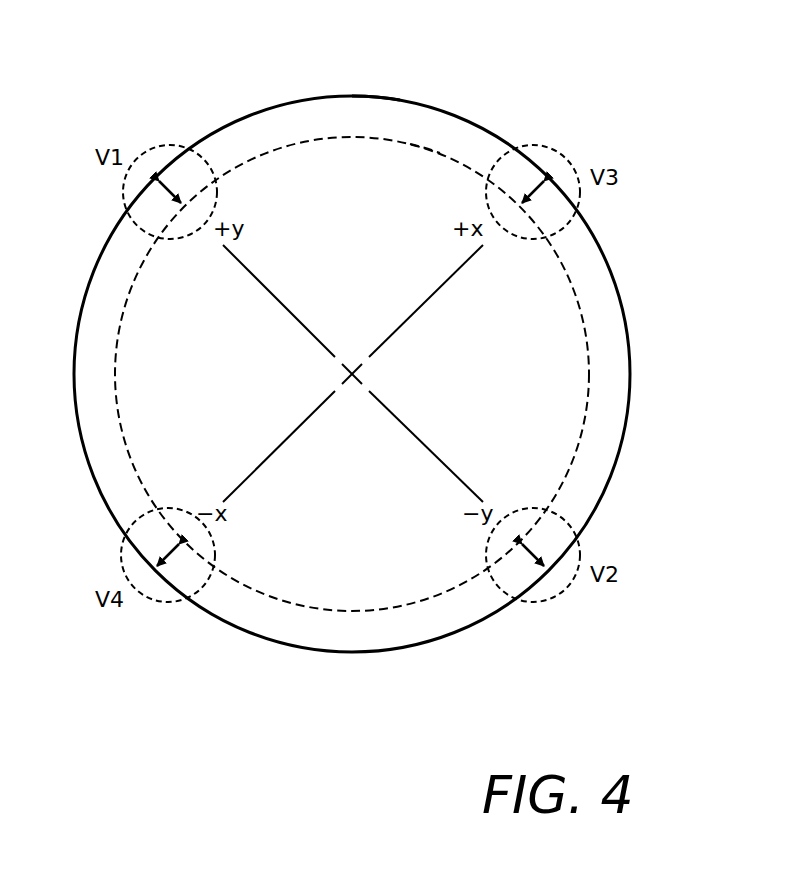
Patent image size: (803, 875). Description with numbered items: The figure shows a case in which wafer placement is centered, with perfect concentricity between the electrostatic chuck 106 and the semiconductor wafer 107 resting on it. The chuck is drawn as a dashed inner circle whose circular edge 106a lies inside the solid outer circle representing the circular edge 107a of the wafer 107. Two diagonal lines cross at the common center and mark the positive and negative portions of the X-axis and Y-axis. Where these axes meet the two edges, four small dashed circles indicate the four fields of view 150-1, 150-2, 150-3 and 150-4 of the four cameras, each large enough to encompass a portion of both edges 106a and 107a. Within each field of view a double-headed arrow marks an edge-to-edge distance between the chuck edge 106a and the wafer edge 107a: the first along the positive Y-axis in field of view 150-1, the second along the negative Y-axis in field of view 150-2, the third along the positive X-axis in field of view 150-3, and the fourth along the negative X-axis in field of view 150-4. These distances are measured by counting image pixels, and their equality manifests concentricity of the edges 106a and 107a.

The electrostatic chuck 106 is at (365, 612).
The circular edge of the electrostatic chuck 106a is at (432, 148).
The semiconductor wafer 107 is at (286, 652).
The circular edge of the wafer 107a is at (297, 97).
The field of view of camera 1 150-1 is at (144, 150).
The field of view of camera 2 150-2 is at (553, 600).
The field of view of camera 3 150-3 is at (560, 148).
The field of view of camera 4 150-4 is at (150, 600).